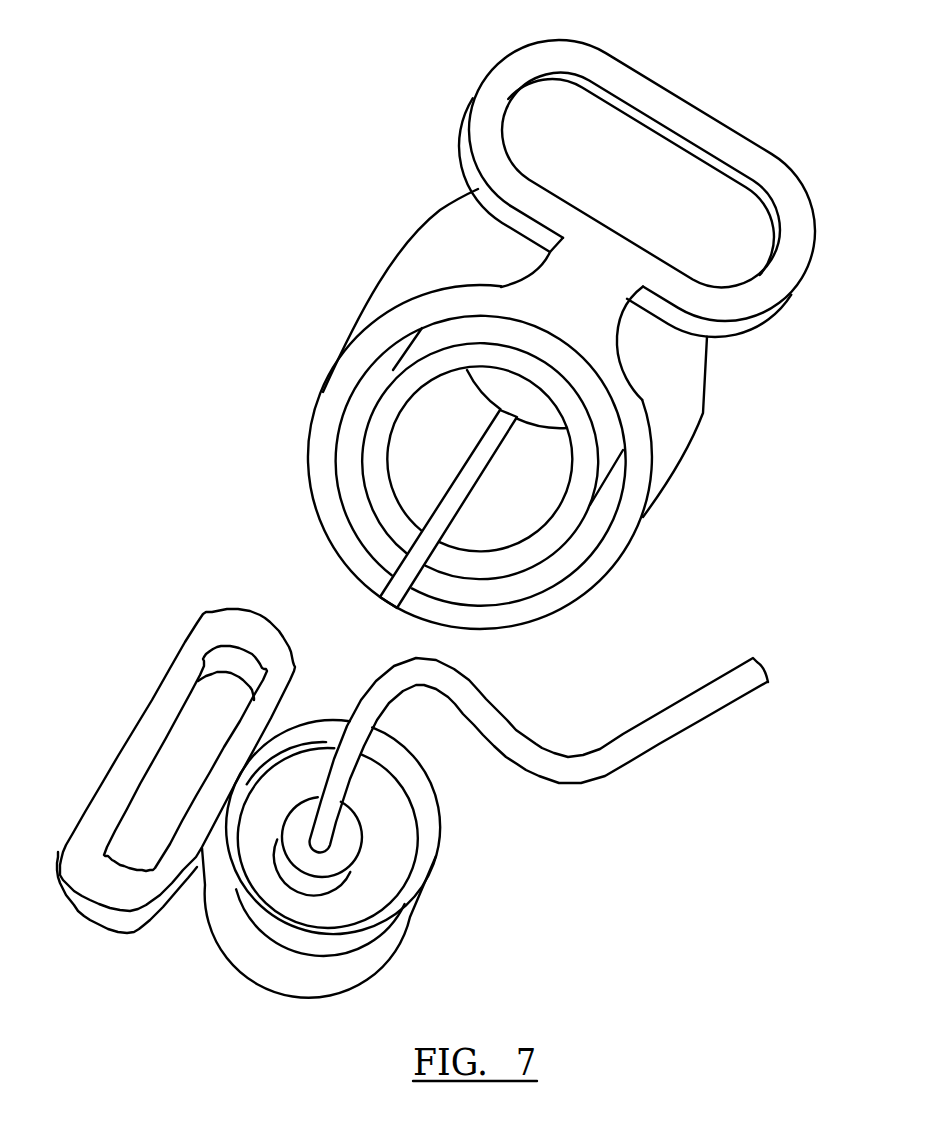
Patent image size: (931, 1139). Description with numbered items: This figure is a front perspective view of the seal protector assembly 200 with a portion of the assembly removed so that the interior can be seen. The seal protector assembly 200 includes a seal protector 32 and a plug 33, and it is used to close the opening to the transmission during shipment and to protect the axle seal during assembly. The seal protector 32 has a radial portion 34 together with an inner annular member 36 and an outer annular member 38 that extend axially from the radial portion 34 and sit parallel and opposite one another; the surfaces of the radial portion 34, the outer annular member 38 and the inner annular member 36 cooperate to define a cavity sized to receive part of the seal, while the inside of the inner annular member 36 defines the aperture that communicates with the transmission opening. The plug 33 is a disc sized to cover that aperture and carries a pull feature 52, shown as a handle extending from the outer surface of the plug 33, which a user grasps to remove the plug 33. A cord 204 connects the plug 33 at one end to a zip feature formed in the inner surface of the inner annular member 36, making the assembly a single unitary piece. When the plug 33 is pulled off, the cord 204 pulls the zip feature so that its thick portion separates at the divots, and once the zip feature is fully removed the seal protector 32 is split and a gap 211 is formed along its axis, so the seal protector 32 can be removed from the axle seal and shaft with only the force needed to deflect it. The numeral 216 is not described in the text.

The seal protector assembly 200 is at (247, 214).
The strap loop 216 is at (651, 94).
The seal protector 32 is at (387, 253).
The inner annular member 36 is at (420, 428).
The outer annular member 38 is at (668, 394).
The gap 211 is at (433, 507).
The radial portion 34 is at (540, 542).
The pull feature 52 is at (133, 753).
The plug 33 is at (443, 857).
The cord 204 is at (667, 722).